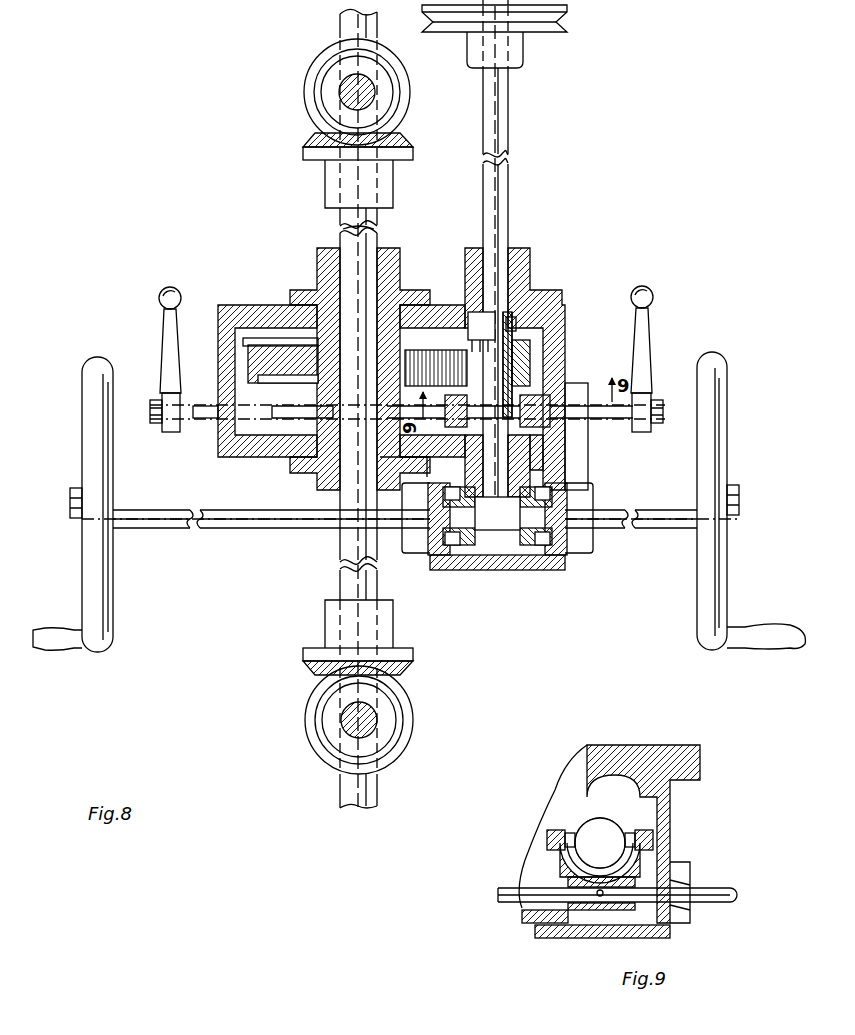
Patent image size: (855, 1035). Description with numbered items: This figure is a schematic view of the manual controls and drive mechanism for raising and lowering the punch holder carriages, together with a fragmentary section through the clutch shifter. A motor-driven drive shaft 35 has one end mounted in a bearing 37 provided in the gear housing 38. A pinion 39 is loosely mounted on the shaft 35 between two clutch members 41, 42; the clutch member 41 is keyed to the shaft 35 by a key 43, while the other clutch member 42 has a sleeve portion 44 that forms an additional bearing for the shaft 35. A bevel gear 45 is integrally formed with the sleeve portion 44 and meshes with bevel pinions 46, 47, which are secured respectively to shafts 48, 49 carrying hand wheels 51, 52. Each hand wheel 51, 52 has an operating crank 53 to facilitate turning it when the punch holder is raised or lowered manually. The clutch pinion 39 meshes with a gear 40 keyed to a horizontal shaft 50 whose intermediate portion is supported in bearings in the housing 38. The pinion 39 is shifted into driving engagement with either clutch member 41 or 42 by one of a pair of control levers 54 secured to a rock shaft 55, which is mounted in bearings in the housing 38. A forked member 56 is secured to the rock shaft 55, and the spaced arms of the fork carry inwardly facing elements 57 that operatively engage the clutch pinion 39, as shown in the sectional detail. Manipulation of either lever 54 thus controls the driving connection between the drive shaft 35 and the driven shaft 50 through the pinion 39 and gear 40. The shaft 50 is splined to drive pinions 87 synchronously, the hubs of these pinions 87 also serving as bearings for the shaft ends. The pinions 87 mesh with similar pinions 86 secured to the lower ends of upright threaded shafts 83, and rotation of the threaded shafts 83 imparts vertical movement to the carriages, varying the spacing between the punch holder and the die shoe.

In FIG. 8, the drive shaft 35 is at (506, 205).
In FIG. 9, the drive shaft 35 is at (601, 842).
In FIG. 8, the bearing 37 is at (516, 273).
In FIG. 8, the housing 38 is at (250, 304).
In FIG. 9, the housing 38 is at (673, 834).
In FIG. 8, the pinion 39 is at (527, 358).
In FIG. 9, the pinion 39 is at (624, 830).
In FIG. 8, the gear 40 is at (256, 357).
In FIG. 8, the clutch member 41 is at (470, 330).
In FIG. 8, the clutch member 42 is at (525, 440).
In FIG. 8, the key 43 is at (512, 323).
In FIG. 8, the sleeve portion 44 is at (522, 465).
In FIG. 8, the bevel gear 45 is at (517, 503).
In FIG. 8, the bevel pinion 46 is at (526, 547).
In FIG. 8, the bevel pinion 47 is at (468, 547).
In FIG. 8, the shaft 48 is at (613, 530).
In FIG. 8, the shaft 49 is at (240, 530).
In FIG. 8, the shaft 50 is at (345, 238).
In FIG. 8, the hand wheel 51 is at (716, 583).
In FIG. 8, the hand wheel 52 is at (103, 597).
In FIG. 8, the operating crank 53 is at (50, 642).
In FIG. 8, the control lever 54 is at (169, 327).
In FIG. 8, the rock shaft 55 is at (208, 420).
In FIG. 9, the rock shaft 55 is at (513, 900).
In FIG. 8, the forked member 56 is at (545, 388).
In FIG. 9, the forked member 56 is at (556, 867).
In FIG. 9, the inwardly facing element 57 is at (568, 830).
In FIG. 8, the threaded shaft 83 is at (366, 92).
In FIG. 8, the pinion 86 is at (305, 92).
In FIG. 8, the pinion 87 is at (318, 142).